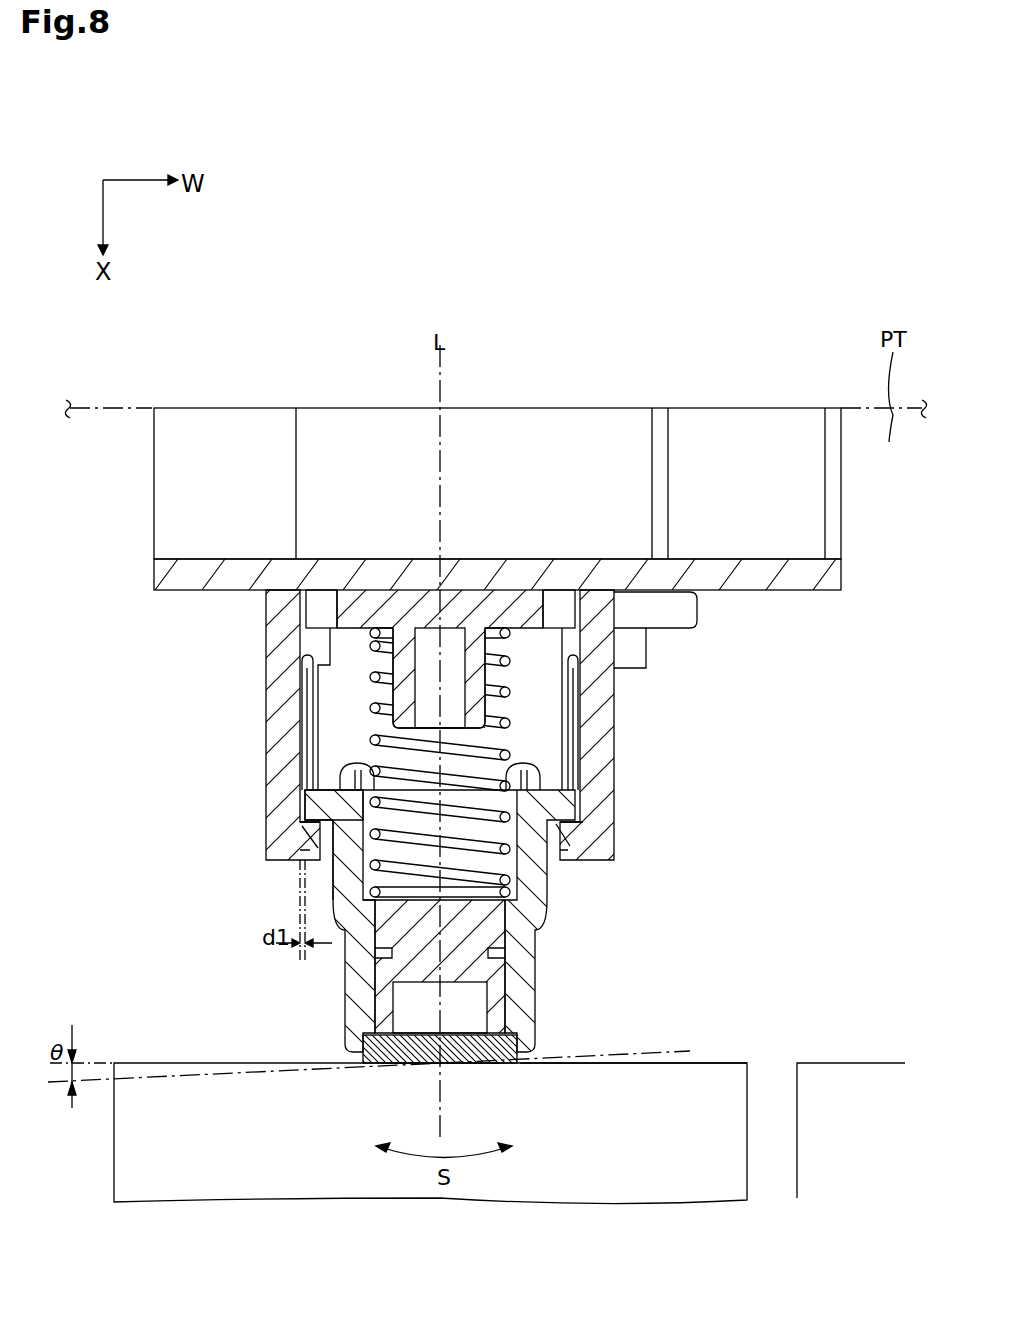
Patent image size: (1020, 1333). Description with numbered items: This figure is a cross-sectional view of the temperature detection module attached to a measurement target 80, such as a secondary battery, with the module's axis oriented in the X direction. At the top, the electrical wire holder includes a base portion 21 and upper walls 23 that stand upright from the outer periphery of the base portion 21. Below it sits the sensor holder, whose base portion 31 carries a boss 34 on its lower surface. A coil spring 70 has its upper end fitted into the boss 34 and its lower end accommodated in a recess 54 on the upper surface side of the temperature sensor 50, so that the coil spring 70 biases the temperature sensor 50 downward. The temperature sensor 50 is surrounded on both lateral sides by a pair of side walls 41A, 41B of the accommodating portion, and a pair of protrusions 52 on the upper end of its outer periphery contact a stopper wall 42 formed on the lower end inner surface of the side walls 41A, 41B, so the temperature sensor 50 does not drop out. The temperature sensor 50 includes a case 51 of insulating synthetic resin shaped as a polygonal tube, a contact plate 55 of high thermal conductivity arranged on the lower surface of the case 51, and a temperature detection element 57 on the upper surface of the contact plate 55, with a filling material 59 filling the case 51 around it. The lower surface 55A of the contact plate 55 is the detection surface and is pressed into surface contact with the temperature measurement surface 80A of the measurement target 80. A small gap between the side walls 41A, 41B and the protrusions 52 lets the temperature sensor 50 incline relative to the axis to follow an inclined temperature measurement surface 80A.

The base portion 21 is at (795, 563).
The upper walls 23 is at (740, 440).
The base portion 31 is at (496, 605).
The boss 34 is at (470, 672).
The side wall 41A is at (283, 671).
The side wall 41B is at (596, 757).
The stopper wall 42 is at (570, 830).
The temperature sensor 50 is at (551, 985).
The case 51 is at (535, 888).
The protrusions 52 is at (305, 808).
The recess 54 is at (378, 893).
The contact plate 55 is at (405, 1063).
The lower surface 55A is at (483, 1063).
The temperature detection element 57 is at (467, 1007).
The filling material 59 is at (480, 927).
The coil spring 70 is at (510, 725).
The measurement target 80 is at (170, 1185).
The temperature measurement surface 80A is at (713, 1062).